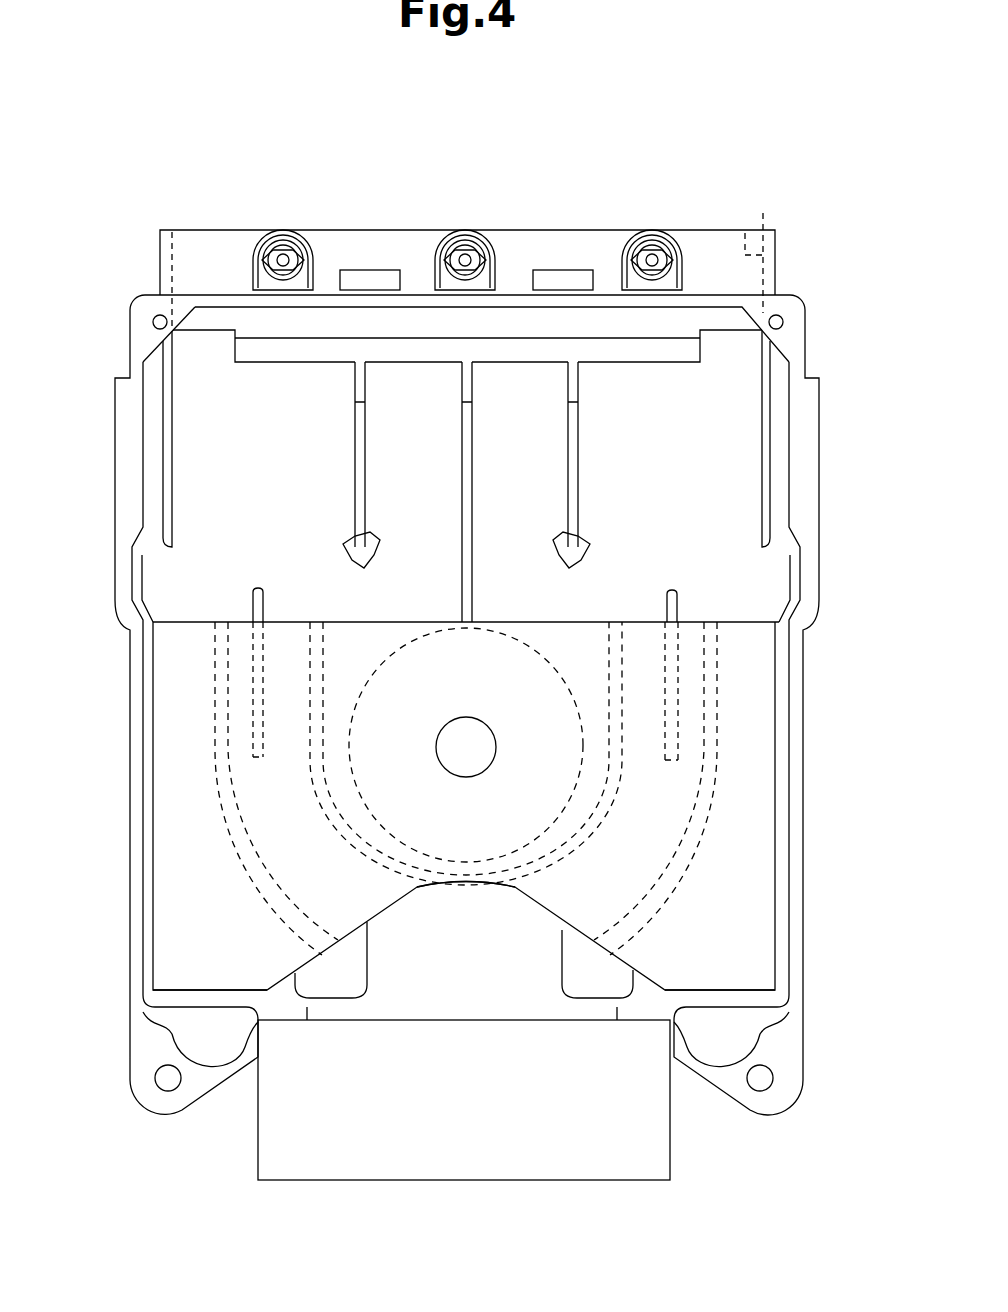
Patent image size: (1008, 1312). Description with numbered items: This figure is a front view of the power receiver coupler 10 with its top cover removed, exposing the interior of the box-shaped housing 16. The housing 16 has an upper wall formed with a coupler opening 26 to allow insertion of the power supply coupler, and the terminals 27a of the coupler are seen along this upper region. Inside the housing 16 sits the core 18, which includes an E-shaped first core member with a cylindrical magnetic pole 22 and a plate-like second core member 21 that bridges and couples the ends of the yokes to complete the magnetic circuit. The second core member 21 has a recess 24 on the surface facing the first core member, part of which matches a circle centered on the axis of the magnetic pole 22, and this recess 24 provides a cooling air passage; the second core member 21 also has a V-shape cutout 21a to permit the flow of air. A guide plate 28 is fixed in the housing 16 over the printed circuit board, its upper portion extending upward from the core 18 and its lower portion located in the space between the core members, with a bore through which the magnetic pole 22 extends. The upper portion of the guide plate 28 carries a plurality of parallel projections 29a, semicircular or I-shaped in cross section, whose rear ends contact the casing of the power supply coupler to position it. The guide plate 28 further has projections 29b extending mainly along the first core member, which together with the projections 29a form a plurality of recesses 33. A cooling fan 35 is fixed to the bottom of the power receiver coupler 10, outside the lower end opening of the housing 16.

The power receiver coupler 10 is at (826, 853).
The housing 16 is at (805, 500).
The core 18 is at (153, 863).
The second core member 21 is at (765, 972).
The V-shape cutout 21a is at (397, 900).
The magnetic pole 22 is at (395, 640).
The recess 24 is at (250, 848).
The coupler opening 26 is at (467, 251).
The terminal 27a is at (278, 298).
The guide plate 28 is at (150, 578).
The projections 29a is at (355, 468).
The projections 29b is at (253, 600).
The recesses 33 is at (466, 569).
The cooling fan 35 is at (580, 1172).